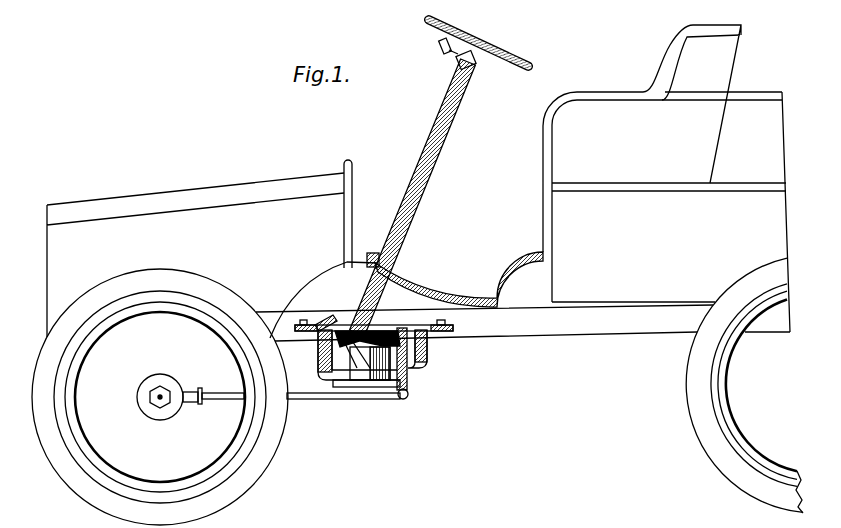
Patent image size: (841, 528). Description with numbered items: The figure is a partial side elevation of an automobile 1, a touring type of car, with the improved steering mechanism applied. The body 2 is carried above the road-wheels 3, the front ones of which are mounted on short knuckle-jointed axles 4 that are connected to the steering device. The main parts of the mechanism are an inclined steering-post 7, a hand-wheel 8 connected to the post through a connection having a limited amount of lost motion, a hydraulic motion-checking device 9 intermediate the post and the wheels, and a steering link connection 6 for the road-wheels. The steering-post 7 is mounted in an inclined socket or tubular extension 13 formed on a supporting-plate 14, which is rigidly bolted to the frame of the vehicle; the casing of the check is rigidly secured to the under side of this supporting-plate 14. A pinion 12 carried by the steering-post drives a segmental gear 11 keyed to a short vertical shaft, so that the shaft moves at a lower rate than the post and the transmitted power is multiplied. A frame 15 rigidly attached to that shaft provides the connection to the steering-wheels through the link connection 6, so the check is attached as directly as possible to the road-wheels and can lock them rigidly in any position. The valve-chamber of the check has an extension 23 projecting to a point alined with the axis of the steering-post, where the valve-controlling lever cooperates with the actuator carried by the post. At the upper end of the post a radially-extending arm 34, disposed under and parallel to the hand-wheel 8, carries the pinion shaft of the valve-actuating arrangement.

The automobile 1 is at (523, 332).
The body 2 is at (514, 288).
The road-wheels 3 is at (275, 450).
The knuckle-jointed axles 4 is at (190, 404).
The steering link connection 6 is at (333, 399).
The steering-post 7 is at (441, 148).
The hand-wheel 8 is at (517, 58).
The hydraulic motion-checking device 9 is at (413, 361).
The segmental gear 11 is at (426, 354).
The pinion 12 is at (331, 351).
The tubular extension 13 is at (383, 300).
The supporting-plate 14 is at (320, 328).
The frame 15 is at (409, 380).
The extension of the valve-chamber 23 is at (338, 388).
The radially-extending arm 34 is at (453, 58).